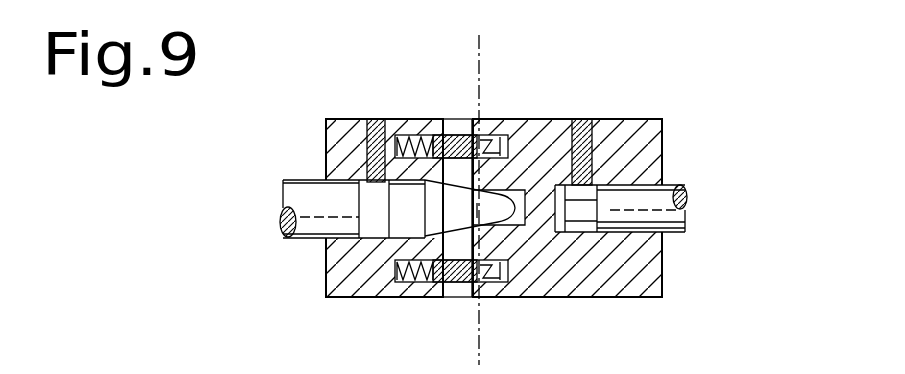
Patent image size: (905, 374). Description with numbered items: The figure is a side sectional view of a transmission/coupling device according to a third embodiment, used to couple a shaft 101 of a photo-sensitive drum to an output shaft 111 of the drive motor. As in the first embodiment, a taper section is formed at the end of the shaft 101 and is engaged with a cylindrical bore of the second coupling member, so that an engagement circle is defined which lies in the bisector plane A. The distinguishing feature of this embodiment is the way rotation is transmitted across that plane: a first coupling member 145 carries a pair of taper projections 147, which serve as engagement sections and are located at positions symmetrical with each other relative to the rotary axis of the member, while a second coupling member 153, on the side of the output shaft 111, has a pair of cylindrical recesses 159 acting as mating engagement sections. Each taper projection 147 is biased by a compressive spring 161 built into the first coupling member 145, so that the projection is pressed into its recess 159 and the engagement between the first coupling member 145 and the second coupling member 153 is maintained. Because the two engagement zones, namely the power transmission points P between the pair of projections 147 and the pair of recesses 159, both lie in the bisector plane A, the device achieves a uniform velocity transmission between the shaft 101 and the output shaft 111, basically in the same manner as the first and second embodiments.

The shaft 101 is at (290, 192).
The output shaft 111 is at (658, 195).
The first coupling member 145 is at (337, 298).
The taper projections 147 is at (437, 119).
The second coupling member 153 is at (622, 283).
The cylindrical recesses 159 is at (507, 119).
The compressive spring 161 is at (392, 118).
The power transmission points P is at (463, 118).
The bisector plane A is at (482, 55).